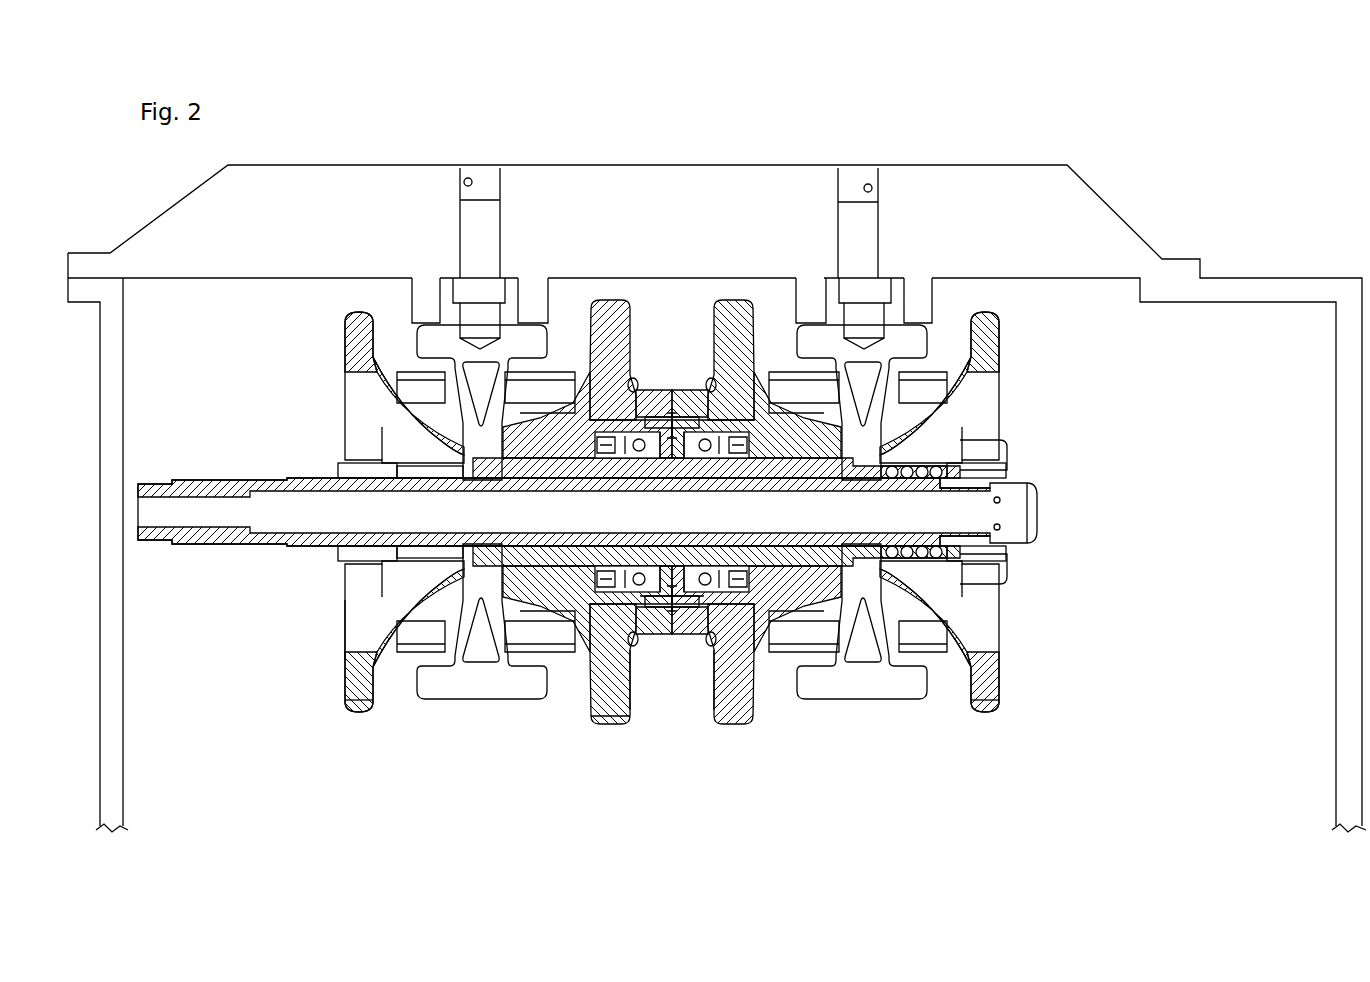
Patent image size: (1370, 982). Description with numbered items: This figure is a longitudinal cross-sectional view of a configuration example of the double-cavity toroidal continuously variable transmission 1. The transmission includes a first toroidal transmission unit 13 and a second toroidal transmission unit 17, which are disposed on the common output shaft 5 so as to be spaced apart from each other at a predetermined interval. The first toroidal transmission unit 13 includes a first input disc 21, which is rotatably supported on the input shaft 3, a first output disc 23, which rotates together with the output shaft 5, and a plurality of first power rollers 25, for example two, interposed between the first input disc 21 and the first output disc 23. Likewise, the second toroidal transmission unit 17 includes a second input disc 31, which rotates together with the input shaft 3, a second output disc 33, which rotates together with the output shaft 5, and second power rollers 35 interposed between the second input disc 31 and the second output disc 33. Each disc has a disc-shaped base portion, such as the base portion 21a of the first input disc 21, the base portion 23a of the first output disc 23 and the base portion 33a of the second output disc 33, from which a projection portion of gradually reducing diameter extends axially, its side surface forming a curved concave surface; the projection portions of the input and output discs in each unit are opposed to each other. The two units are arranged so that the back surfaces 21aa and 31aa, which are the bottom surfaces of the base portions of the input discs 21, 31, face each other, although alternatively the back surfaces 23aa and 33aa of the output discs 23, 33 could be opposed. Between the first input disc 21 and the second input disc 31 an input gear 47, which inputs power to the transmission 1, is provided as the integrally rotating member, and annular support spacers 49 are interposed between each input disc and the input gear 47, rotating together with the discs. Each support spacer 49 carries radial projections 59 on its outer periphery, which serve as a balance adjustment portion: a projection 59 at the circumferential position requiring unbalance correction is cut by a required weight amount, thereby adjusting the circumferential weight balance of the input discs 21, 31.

The continuously variable transmission 1 is at (1133, 398).
The input shaft 3 is at (672, 615).
The output shaft 5 is at (300, 478).
The first toroidal transmission unit 13 is at (320, 733).
The second toroidal transmission unit 17 is at (1013, 704).
The first input disc 21 is at (612, 308).
The base portion 21a is at (610, 718).
The back surface 21aa is at (640, 707).
The first output disc 23 is at (352, 318).
The base portion 23a is at (365, 700).
The back surface 23aa is at (347, 643).
The first power rollers 25 is at (393, 388).
The second input disc 31 is at (738, 308).
The back surface 31aa is at (717, 710).
The second output disc 33 is at (993, 320).
The base portion 33a is at (985, 710).
The back surface 33aa is at (1000, 618).
The second power rollers 35 is at (947, 388).
The input gear 47 is at (668, 408).
The support spacers 49 is at (712, 380).
The radial projections 59 is at (707, 650).